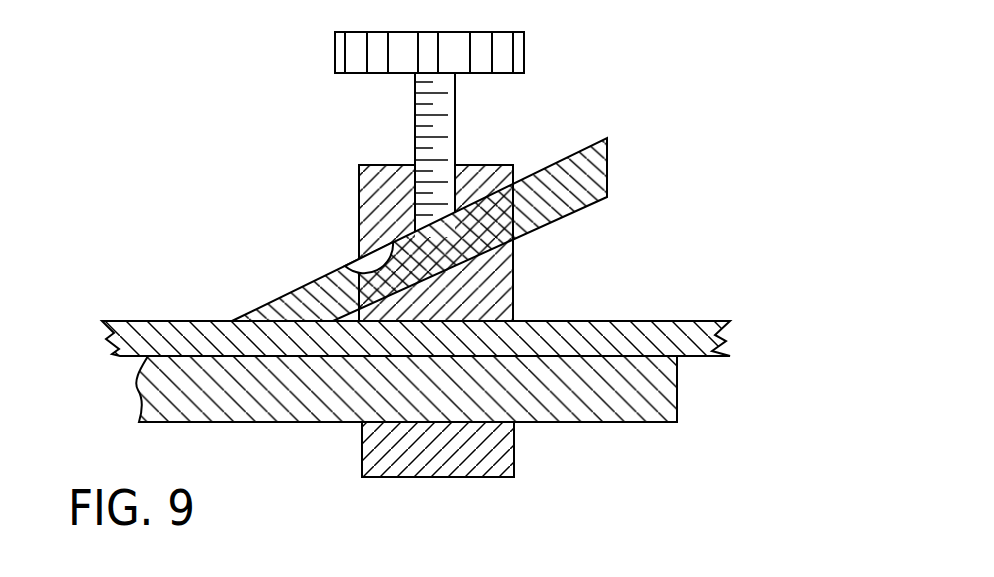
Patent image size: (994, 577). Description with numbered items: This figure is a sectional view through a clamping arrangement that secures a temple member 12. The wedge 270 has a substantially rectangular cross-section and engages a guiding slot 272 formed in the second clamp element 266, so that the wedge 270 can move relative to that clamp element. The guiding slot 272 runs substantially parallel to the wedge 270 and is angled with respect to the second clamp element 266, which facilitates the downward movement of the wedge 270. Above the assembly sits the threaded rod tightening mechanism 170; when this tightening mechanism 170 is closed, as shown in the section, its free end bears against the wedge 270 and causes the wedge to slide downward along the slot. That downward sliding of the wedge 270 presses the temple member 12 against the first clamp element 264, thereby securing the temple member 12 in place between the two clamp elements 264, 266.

The threaded rod tightening mechanism 170 is at (445, 108).
The wedge 270 is at (287, 294).
The guiding slot 272 is at (345, 270).
The temple member 12 is at (635, 327).
The first clamp element 264 is at (225, 408).
The second clamp element 266 is at (514, 460).